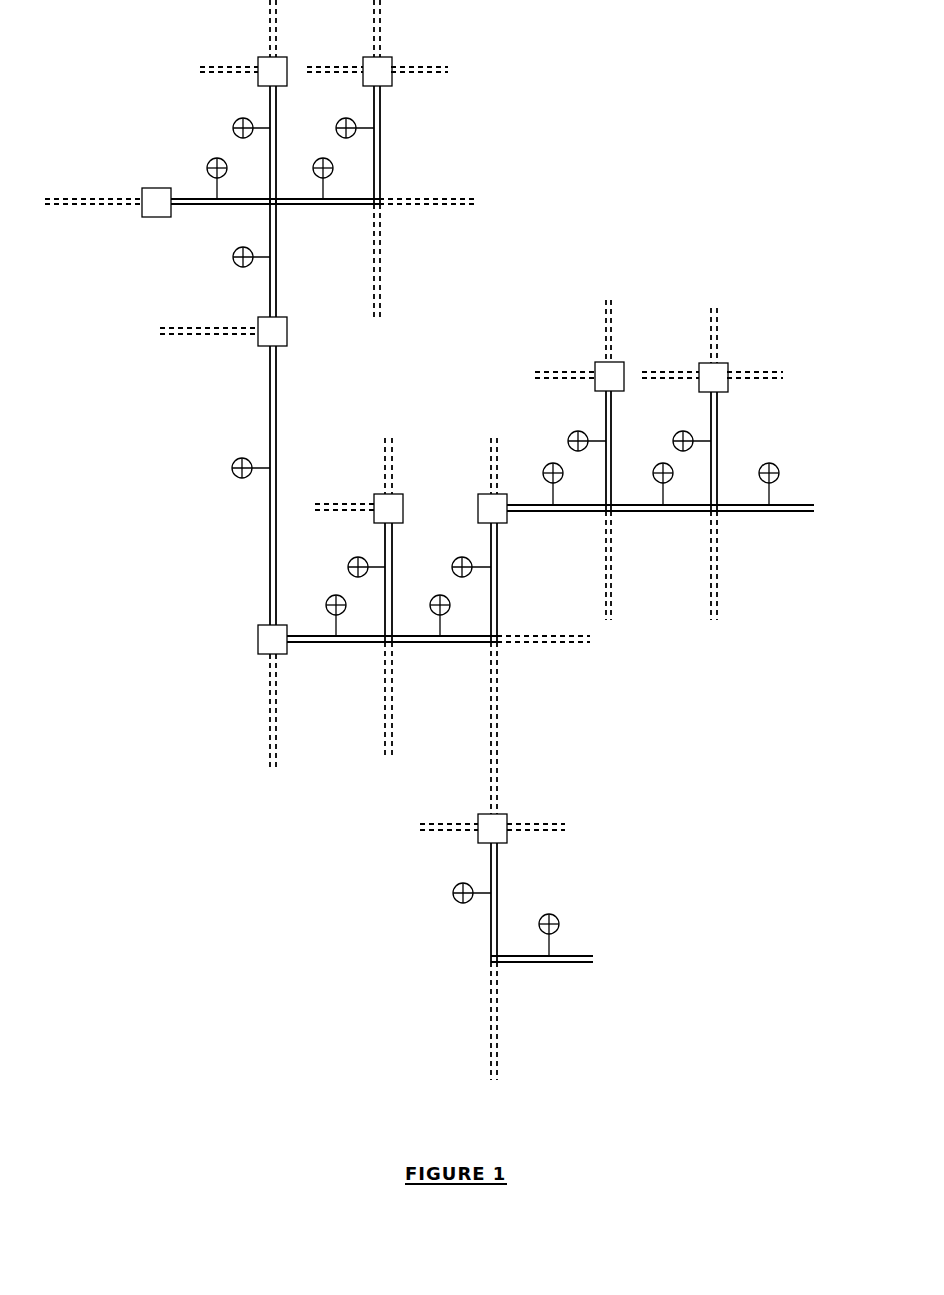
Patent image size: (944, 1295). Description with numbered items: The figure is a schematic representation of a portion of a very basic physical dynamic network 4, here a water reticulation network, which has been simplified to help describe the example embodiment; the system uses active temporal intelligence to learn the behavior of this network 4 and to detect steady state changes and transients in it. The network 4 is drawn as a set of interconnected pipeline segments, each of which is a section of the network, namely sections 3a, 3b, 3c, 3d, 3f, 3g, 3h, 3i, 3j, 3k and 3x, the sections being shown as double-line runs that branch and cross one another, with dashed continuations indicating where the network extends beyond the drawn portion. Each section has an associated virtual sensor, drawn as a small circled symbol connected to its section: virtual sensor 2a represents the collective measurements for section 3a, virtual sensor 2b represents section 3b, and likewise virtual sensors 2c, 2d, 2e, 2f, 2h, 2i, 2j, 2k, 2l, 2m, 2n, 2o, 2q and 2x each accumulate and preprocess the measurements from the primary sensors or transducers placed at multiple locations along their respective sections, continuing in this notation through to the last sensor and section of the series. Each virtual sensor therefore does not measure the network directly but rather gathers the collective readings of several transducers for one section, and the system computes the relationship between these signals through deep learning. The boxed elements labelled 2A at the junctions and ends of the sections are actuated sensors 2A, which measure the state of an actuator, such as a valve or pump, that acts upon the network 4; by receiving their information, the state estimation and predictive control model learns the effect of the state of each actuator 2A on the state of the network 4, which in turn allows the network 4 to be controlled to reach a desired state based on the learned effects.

The actuated sensor 2A is at (264, 79).
The virtual sensor 2a is at (206, 166).
The virtual sensor 2b is at (232, 126).
The virtual sensor 2c is at (346, 118).
The virtual sensor 2d is at (333, 166).
The virtual sensor 2e is at (232, 257).
The virtual sensor 2f is at (232, 467).
The virtual sensor 2h is at (578, 430).
The virtual sensor 2i is at (661, 462).
The virtual sensor 2j is at (692, 433).
The virtual sensor 2k is at (780, 472).
The virtual sensor 2l is at (330, 595).
The virtual sensor 2m is at (355, 557).
The virtual sensor 2n is at (450, 606).
The virtual sensor 2o is at (475, 564).
The virtual sensor 2q is at (551, 462).
The virtual sensor 2x is at (452, 893).
The section 3a is at (250, 203).
The section 3b is at (273, 168).
The section 3c is at (380, 95).
The section 3d is at (366, 203).
The section 3f is at (273, 420).
The section 3g is at (585, 510).
The section 3h is at (607, 480).
The section 3i is at (696, 508).
The section 3j is at (716, 458).
The section 3k is at (765, 508).
The section 3x is at (492, 902).
The network 4 is at (754, 334).